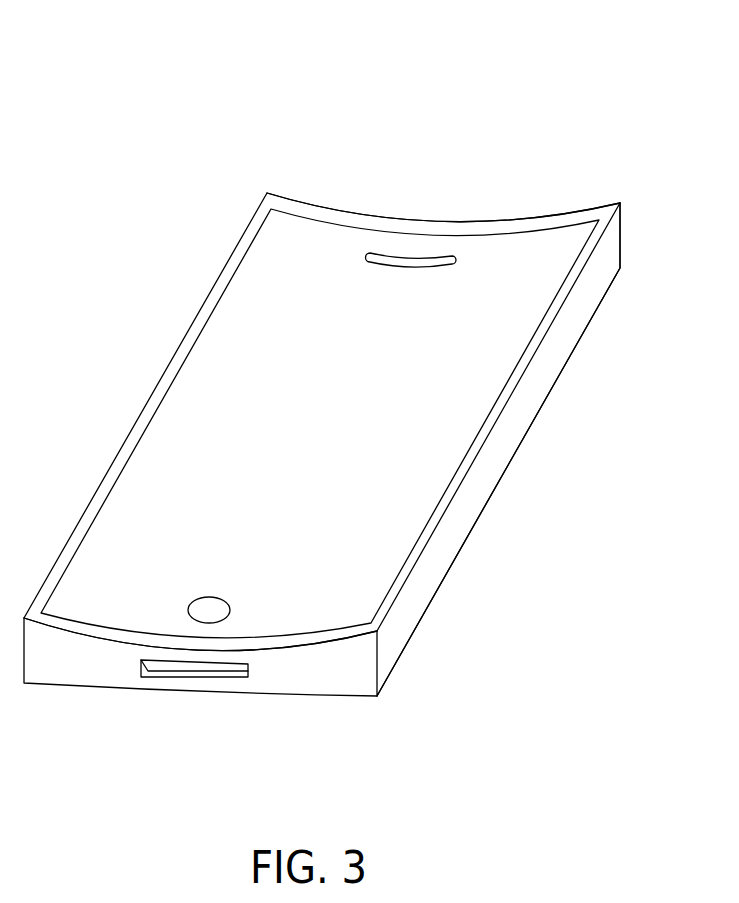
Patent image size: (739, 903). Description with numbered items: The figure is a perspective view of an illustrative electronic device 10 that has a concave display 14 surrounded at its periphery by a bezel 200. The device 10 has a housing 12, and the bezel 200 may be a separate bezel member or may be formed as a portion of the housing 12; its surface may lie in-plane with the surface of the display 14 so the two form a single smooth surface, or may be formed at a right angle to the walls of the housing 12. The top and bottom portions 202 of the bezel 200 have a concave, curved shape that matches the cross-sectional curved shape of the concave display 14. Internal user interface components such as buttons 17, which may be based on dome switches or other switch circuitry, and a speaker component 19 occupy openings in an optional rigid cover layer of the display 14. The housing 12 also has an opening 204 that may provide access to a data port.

The electronic device 10 is at (326, 389).
The housing 12 is at (448, 536).
The concave display 14 is at (215, 353).
The buttons 17 is at (197, 610).
The speaker component 19 is at (428, 258).
The bezel 200 is at (510, 383).
The top and bottom portions of bezel 202 is at (355, 222).
The opening 204 is at (233, 672).